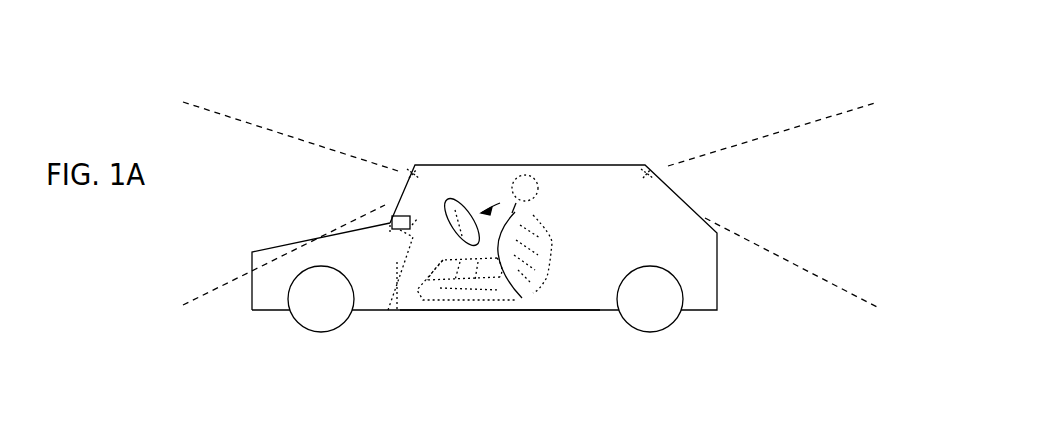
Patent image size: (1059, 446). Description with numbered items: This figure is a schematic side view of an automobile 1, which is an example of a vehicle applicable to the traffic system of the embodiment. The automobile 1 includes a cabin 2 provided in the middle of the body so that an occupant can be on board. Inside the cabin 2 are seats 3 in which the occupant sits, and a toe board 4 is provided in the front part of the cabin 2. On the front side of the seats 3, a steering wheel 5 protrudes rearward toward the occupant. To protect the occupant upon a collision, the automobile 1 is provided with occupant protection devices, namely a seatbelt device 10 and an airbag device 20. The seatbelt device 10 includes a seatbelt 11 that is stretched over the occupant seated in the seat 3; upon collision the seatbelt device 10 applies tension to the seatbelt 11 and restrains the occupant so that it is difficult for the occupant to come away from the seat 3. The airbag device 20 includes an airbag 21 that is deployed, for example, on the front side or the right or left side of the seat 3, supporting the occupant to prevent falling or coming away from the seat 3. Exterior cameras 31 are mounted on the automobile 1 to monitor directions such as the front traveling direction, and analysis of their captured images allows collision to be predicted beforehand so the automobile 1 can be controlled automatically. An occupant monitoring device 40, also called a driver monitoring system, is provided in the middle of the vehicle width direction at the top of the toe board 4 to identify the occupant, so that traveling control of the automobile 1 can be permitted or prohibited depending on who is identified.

The automobile 1 is at (296, 162).
The cabin 2 is at (592, 190).
The seat 3 is at (485, 310).
The toe board 4 is at (407, 243).
The steering wheel 5 is at (446, 198).
The seatbelt device 10 is at (556, 178).
The seatbelt 11 is at (525, 188).
The airbag device 20 is at (458, 200).
The airbag 21 is at (477, 219).
The exterior camera 31 is at (417, 163).
The occupant monitoring device 40 is at (390, 222).